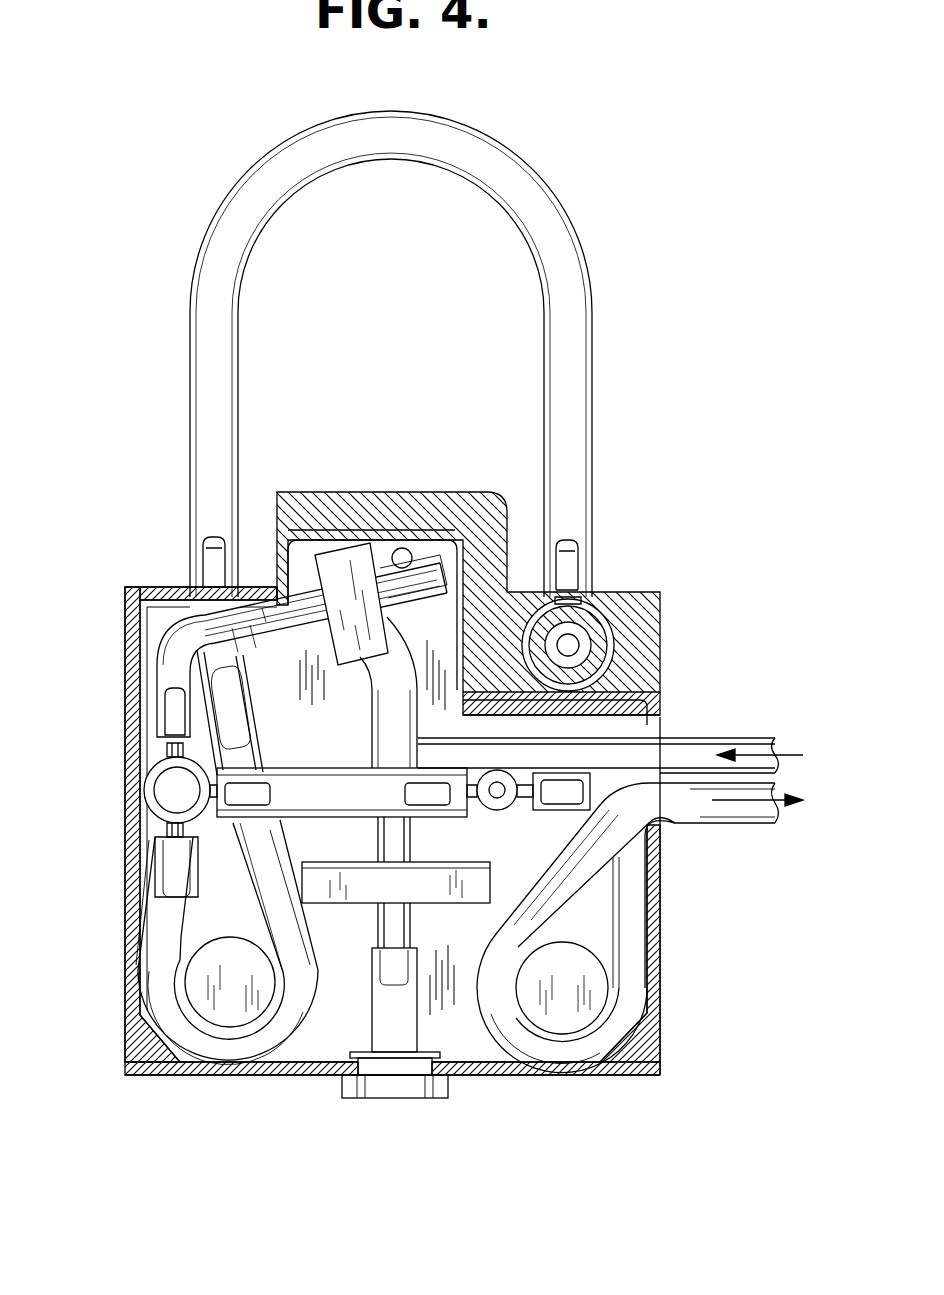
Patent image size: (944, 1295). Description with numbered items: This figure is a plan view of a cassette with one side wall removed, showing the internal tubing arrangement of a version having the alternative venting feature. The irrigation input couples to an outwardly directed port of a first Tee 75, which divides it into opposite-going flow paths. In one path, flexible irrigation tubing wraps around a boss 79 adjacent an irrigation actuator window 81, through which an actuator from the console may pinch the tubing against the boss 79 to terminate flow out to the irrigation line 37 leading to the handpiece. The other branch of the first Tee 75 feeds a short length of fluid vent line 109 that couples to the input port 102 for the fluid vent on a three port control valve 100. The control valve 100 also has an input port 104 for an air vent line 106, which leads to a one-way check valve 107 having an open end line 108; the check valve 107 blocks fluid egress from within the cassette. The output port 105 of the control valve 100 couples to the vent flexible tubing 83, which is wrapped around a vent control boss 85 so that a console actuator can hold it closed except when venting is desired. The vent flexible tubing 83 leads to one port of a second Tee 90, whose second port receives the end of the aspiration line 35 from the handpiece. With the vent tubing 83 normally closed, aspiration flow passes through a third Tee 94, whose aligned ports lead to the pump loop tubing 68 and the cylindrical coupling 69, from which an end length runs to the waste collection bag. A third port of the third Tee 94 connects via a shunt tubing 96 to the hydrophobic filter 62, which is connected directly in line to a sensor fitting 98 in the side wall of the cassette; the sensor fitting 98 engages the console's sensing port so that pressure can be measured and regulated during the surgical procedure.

The aspiration line 35 is at (745, 737).
The irrigation line 37 is at (752, 823).
The hydrophobic filter 62 is at (363, 903).
The pump loop tubing 68 is at (572, 218).
The cylindrical coupling 69 is at (600, 597).
The first Tee 75 is at (513, 813).
The boss 79 is at (562, 1030).
The irrigation actuator window 81 is at (578, 1075).
The vent flexible tubing 83 is at (158, 992).
The vent control boss 85 is at (222, 1012).
The second Tee 90 is at (372, 723).
The third Tee 94 is at (190, 613).
The shunt tubing 96 is at (417, 640).
The sensor fitting 98 is at (445, 1098).
The three port control valve 100 is at (150, 782).
The input port for the fluid vent 102 is at (167, 843).
The input port for the air vent line 104 is at (163, 748).
The output port 105 is at (163, 828).
The air vent line 106 is at (170, 678).
The one-way check valve 107 is at (358, 565).
The open end line 108 is at (420, 570).
The fluid vent line 109 is at (277, 687).